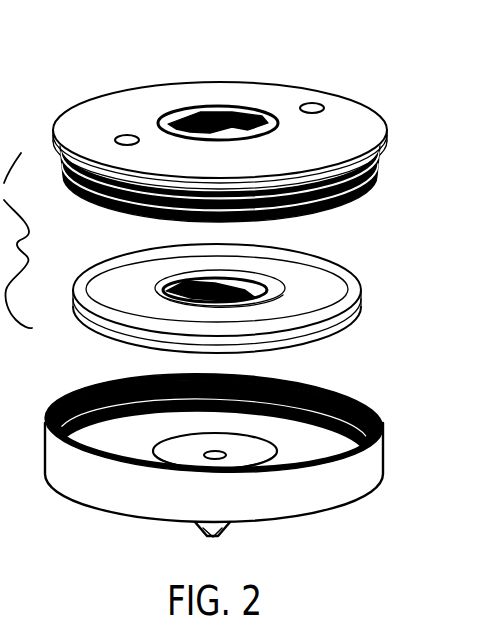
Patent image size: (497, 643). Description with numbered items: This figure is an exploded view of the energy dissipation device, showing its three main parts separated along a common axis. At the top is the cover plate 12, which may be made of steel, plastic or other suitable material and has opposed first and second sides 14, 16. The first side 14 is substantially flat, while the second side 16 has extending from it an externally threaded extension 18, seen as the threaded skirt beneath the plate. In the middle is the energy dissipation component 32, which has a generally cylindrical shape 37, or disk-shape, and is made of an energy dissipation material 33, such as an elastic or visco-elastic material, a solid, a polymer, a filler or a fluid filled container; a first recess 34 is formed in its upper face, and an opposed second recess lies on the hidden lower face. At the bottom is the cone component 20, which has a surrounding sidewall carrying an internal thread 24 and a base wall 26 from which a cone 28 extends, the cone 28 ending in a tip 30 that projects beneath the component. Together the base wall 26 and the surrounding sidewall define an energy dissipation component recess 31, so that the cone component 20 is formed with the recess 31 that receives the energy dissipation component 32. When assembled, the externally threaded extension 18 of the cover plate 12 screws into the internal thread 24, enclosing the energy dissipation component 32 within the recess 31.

The cover plate 12 is at (256, 81).
The first side 14 is at (343, 93).
The second side 16 is at (57, 150).
The externally threaded extension 18 is at (356, 200).
The cone component 20 is at (108, 510).
The internal thread 24 is at (84, 386).
The base wall 26 is at (49, 482).
The cone 28 is at (212, 519).
The tip 30 is at (219, 521).
The energy dissipation component recess 31 is at (287, 463).
The energy dissipation component 32 is at (340, 269).
The energy dissipation material 33 is at (334, 323).
The first recess 34 is at (252, 281).
The generally cylindrical shape 37 is at (306, 345).